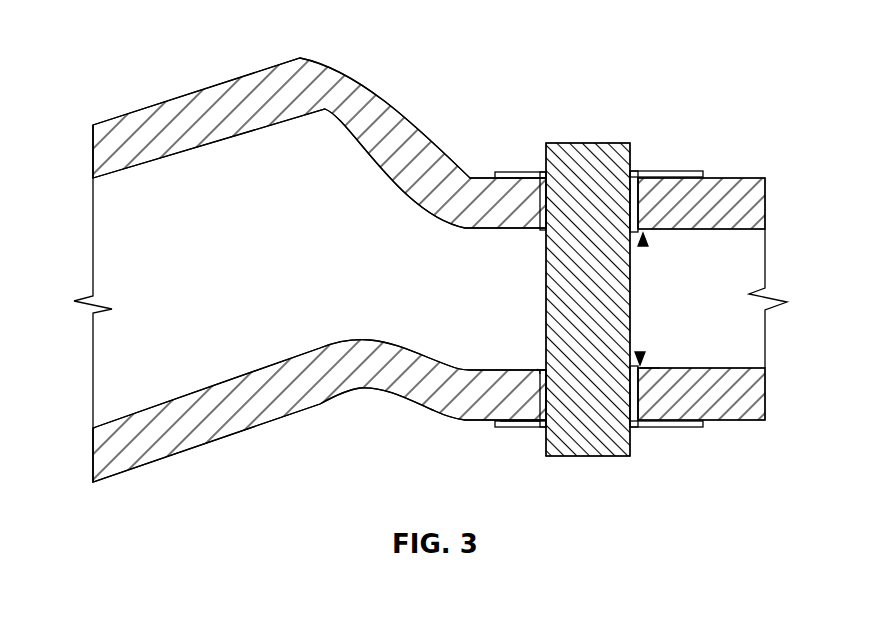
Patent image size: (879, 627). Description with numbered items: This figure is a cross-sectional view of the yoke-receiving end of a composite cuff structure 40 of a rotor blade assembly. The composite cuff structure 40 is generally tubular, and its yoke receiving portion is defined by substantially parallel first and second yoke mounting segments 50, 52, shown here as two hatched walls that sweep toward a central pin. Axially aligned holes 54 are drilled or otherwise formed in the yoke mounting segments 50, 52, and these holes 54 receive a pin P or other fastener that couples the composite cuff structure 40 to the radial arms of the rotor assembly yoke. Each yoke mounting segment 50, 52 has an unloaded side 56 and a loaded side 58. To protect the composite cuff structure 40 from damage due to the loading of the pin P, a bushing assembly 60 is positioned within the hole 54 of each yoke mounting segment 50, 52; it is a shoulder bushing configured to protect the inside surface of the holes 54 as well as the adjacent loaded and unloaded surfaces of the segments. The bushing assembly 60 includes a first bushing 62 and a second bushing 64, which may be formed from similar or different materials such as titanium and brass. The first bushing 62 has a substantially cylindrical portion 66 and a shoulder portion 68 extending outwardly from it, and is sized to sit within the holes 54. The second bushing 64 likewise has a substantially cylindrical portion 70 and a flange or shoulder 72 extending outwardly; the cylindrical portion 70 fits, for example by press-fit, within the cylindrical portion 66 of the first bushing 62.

The composite cuff structure 40 is at (97, 33).
The first yoke mounting segment 50 is at (378, 93).
The second yoke mounting segment 52 is at (340, 356).
The holes 54 is at (645, 188).
The unloaded side 56 is at (713, 230).
The loaded side 58 is at (752, 178).
The bushing assembly 60 is at (645, 166).
The first bushing 62 is at (532, 165).
The second bushing 64 is at (645, 244).
The cylindrical portion 66 is at (522, 370).
The shoulder portion 68 is at (530, 426).
The cylindrical portion 70 is at (640, 428).
The flange or shoulder 72 is at (657, 362).
The pin P is at (570, 300).